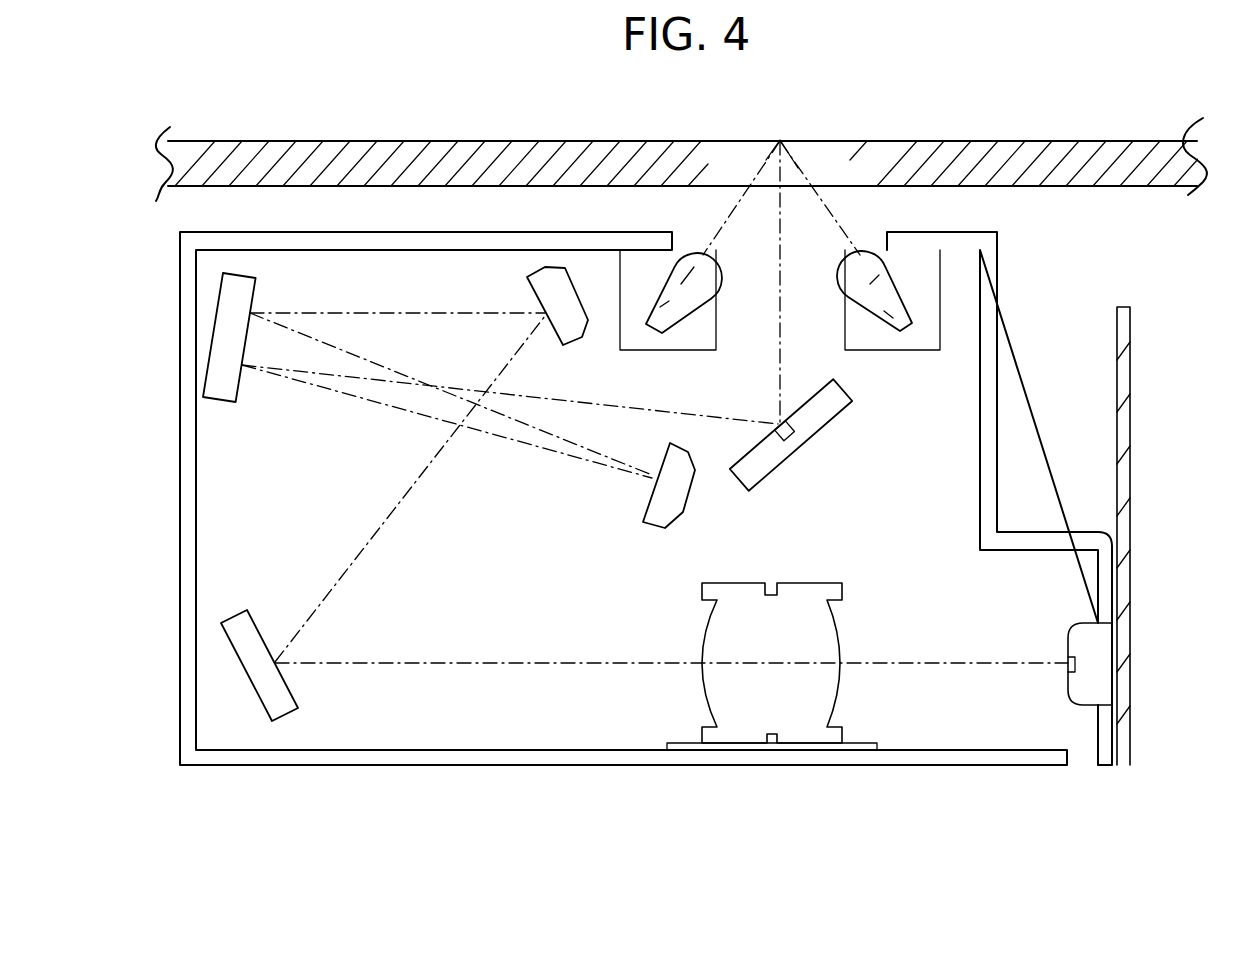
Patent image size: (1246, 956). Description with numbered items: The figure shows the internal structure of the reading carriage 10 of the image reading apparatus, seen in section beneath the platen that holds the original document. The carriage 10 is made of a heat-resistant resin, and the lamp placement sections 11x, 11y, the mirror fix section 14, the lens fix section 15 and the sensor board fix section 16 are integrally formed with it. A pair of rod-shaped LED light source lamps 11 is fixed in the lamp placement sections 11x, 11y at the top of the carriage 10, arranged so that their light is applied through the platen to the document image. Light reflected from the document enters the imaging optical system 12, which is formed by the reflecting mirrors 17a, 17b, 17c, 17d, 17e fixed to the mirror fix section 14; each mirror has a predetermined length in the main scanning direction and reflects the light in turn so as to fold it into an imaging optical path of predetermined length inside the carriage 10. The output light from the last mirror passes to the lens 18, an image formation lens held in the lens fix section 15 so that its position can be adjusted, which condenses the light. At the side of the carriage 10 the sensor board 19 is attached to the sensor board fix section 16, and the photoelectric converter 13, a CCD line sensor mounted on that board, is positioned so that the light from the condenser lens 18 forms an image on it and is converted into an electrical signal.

The carriage 10 is at (638, 766).
The light source lamp 11 is at (707, 305).
The lamp placement section 11x is at (682, 351).
The lamp placement section 11y is at (915, 350).
The imaging optical system 12 is at (490, 460).
The photoelectric converter 13 is at (1087, 635).
The mirror fix section 14 is at (402, 741).
The lens fix section 15 is at (863, 743).
The sensor board fix section 16 is at (1102, 738).
The reflecting mirror 17a is at (818, 435).
The reflecting mirror 17b is at (212, 398).
The reflecting mirror 17c is at (683, 512).
The reflecting mirror 17d is at (540, 295).
The reflecting mirror 17e is at (237, 610).
The lens 18 is at (823, 582).
The sensor board 19 is at (1130, 420).